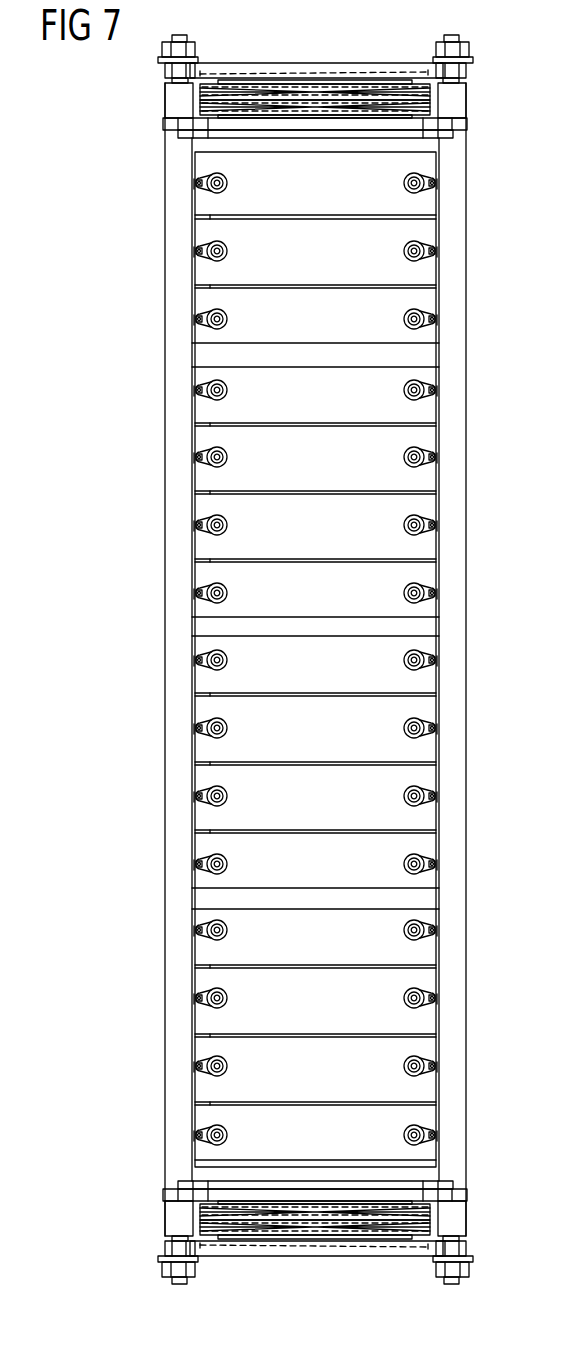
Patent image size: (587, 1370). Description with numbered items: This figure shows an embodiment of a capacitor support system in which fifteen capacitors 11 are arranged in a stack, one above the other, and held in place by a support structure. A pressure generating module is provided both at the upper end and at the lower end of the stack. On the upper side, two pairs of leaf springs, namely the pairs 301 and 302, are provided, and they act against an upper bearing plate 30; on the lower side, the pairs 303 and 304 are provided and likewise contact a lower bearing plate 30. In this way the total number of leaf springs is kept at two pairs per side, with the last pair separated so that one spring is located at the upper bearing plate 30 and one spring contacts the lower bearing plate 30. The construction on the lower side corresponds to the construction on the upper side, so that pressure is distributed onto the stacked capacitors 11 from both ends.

The capacitors 11 is at (425, 203).
The bearing plate 30 is at (337, 72).
The pair of leaf springs 301 is at (433, 98).
The pair of leaf springs 302 is at (433, 108).
The pair of leaf springs 303 is at (433, 1208).
The pair of leaf springs 304 is at (433, 1228).